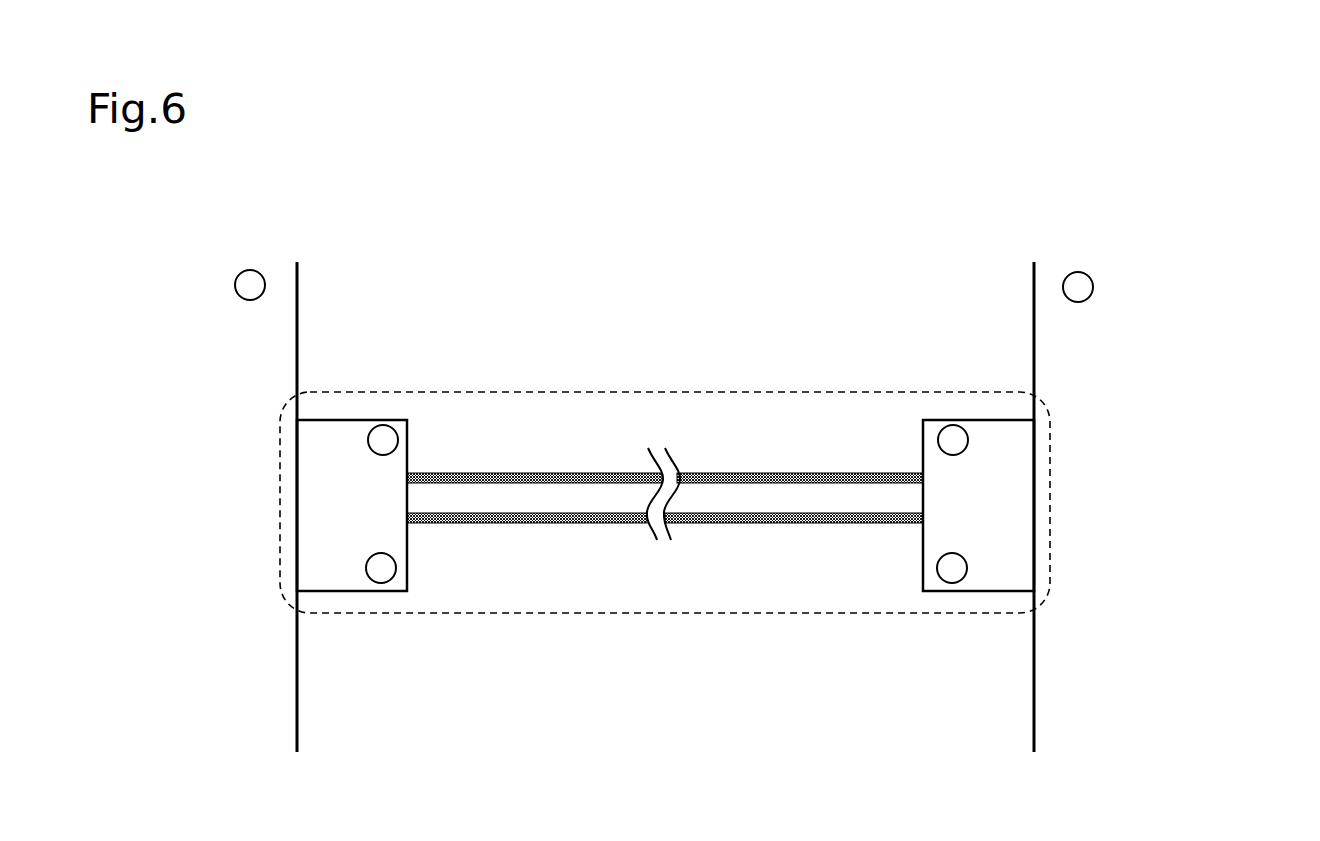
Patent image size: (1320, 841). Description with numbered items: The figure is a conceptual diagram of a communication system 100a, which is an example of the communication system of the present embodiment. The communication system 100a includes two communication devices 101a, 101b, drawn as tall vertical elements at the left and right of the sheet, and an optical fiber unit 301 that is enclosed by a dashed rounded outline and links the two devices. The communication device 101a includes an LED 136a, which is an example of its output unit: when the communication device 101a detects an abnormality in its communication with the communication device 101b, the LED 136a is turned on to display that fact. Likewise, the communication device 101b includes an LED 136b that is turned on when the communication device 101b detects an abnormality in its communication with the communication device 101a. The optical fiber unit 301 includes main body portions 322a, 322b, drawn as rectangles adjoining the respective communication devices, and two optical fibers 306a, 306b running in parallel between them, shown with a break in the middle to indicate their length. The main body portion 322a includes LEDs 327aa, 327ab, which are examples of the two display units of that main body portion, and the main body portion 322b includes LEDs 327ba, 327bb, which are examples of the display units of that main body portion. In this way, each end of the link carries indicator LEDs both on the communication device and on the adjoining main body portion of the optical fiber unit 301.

The communication system 100a is at (708, 162).
The communication device 101a is at (244, 552).
The communication device 101b is at (1085, 552).
The LED 136a is at (246, 283).
The LED 136b is at (1074, 283).
The optical fiber unit 301 is at (653, 390).
The main body portion 322a is at (338, 443).
The main body portion 322b is at (1002, 435).
The LED 327aa is at (385, 435).
The LED 327ab is at (381, 568).
The LED 327ba is at (951, 435).
The LED 327bb is at (952, 568).
The optical fiber 306a is at (732, 480).
The optical fiber 306b is at (743, 523).